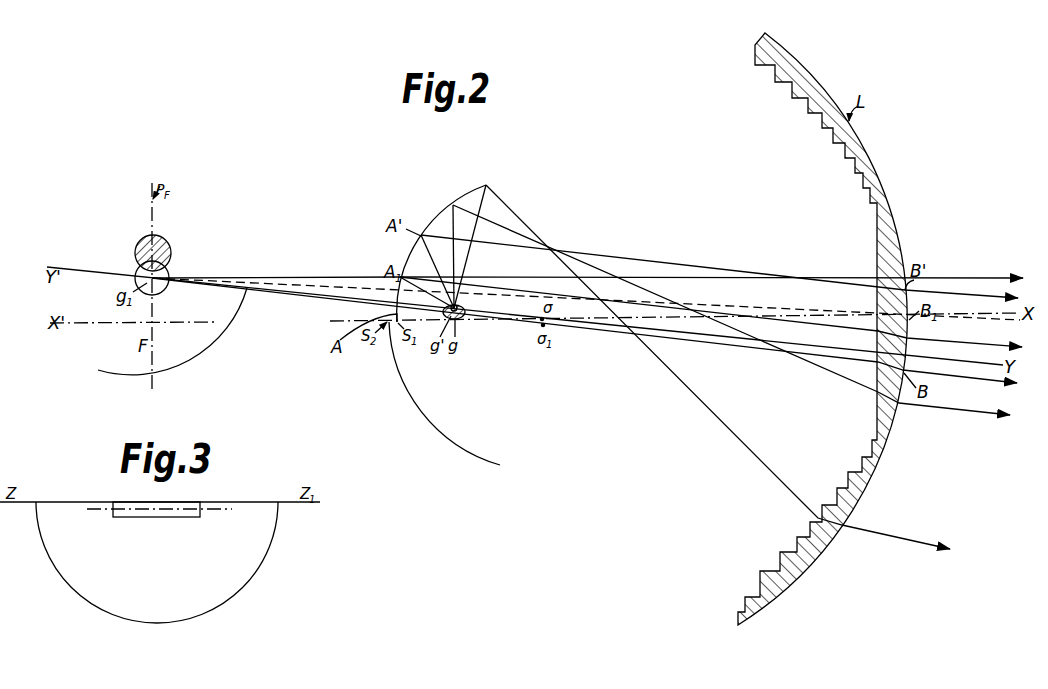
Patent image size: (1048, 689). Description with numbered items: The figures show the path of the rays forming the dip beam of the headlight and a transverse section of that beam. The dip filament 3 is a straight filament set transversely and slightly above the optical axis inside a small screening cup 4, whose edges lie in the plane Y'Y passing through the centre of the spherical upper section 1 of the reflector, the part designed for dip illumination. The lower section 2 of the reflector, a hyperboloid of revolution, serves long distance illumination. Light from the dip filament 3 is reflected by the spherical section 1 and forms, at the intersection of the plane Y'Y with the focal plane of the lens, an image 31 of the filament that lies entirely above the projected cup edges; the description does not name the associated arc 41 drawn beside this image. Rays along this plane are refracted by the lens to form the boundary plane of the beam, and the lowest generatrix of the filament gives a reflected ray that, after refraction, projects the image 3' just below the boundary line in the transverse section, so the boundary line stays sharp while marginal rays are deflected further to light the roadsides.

In FIG. 2, the upper section of the reflector 1 is at (450, 209).
In FIG. 2, the lower section of the reflector 2 is at (432, 428).
In FIG. 2, the dip filament 3 is at (473, 283).
In FIG. 2, the screening cup 4 is at (464, 317).
In FIG. 2, the image of the dip filament 31 is at (161, 246).
In FIG. 2, the equivalent lens surface 41 is at (213, 346).
In FIG. 3, the projected image of the filament 3' is at (159, 523).